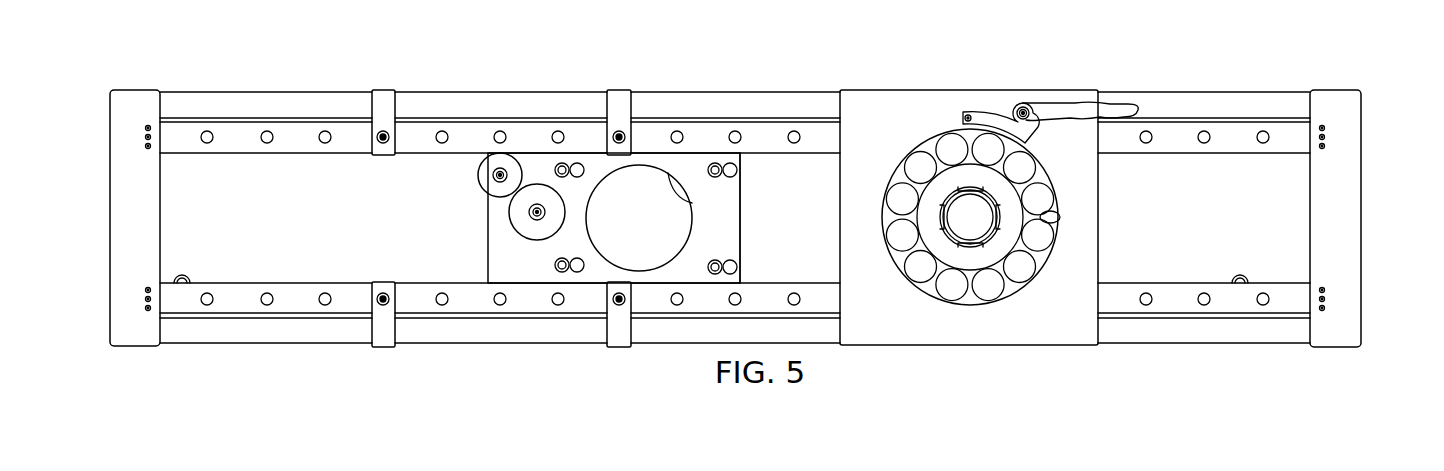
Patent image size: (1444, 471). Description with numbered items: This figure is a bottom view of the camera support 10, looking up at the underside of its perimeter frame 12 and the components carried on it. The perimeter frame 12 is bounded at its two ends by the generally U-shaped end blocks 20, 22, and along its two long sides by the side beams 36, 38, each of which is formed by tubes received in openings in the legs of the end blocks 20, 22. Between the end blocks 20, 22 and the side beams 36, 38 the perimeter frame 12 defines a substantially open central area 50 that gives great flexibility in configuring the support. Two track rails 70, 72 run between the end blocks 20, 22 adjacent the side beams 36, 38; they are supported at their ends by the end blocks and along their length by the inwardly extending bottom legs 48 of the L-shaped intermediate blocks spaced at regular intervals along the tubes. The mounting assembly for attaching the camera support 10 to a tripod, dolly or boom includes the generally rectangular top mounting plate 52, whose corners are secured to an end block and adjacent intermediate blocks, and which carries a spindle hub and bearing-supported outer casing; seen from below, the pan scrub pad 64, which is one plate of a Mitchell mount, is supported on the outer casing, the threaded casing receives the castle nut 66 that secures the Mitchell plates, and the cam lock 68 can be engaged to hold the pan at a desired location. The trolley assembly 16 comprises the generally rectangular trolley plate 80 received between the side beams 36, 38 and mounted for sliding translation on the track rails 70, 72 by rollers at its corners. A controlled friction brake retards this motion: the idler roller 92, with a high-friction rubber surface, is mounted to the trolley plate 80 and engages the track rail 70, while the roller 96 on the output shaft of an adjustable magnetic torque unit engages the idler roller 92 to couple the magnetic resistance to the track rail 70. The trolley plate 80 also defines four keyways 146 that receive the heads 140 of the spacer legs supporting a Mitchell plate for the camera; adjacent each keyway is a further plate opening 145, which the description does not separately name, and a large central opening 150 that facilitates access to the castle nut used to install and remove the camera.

The camera support 10 is at (568, 81).
The perimeter frame 12 is at (877, 316).
The trolley assembly 16 is at (484, 218).
The end block 20 is at (1373, 188).
The end block 22 is at (101, 166).
The side beam 36 is at (692, 81).
The side beam 38 is at (283, 353).
The bottom leg 48 is at (380, 121).
The central area 50 is at (1193, 220).
The top mounting plate 52 is at (918, 110).
The pan scrub pad 64 is at (1040, 262).
The castle nut 66 is at (990, 243).
The cam lock 68 is at (1042, 107).
The track rail 70 is at (238, 141).
The track rail 72 is at (240, 297).
The trolley plate 80 is at (695, 272).
The idler roller 92 is at (480, 176).
The roller 96 is at (541, 240).
The head 140 is at (716, 260).
The fastener hole 145 is at (577, 273).
The keyway 146 is at (738, 267).
The central opening 150 is at (686, 200).